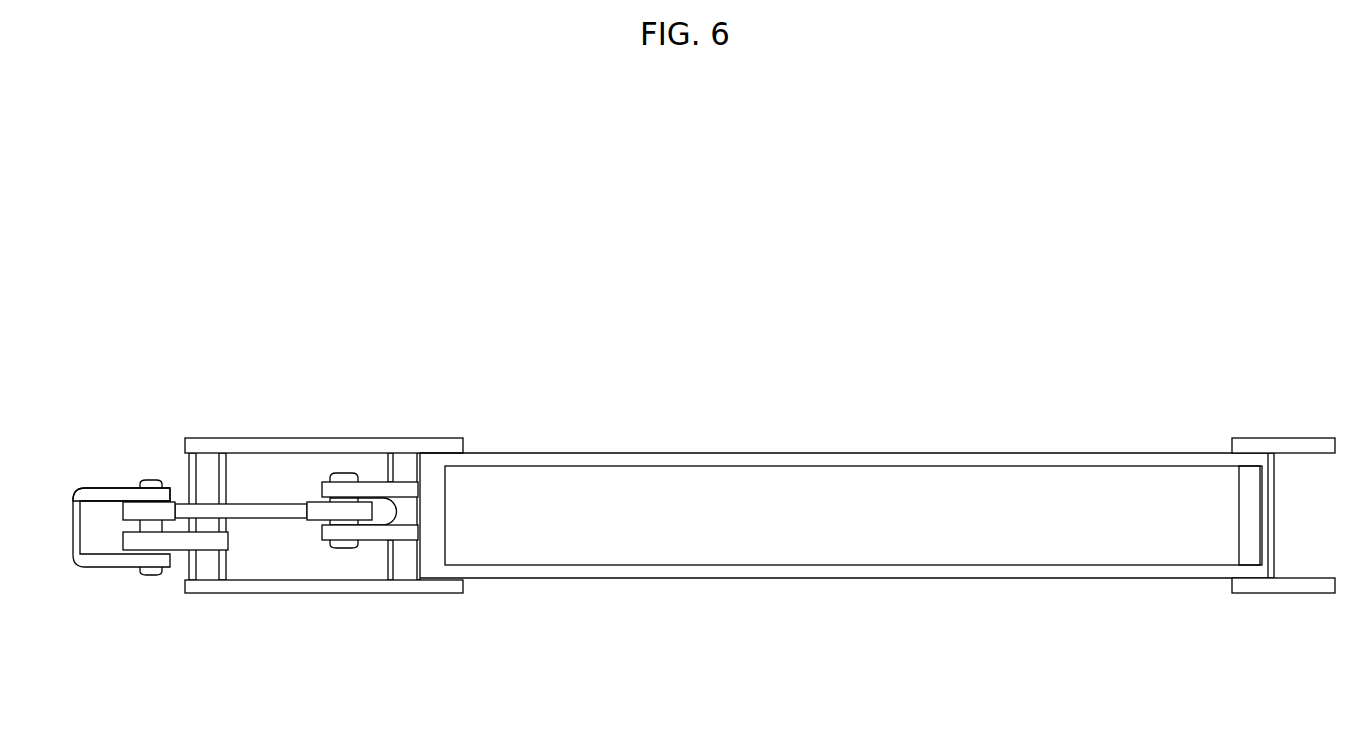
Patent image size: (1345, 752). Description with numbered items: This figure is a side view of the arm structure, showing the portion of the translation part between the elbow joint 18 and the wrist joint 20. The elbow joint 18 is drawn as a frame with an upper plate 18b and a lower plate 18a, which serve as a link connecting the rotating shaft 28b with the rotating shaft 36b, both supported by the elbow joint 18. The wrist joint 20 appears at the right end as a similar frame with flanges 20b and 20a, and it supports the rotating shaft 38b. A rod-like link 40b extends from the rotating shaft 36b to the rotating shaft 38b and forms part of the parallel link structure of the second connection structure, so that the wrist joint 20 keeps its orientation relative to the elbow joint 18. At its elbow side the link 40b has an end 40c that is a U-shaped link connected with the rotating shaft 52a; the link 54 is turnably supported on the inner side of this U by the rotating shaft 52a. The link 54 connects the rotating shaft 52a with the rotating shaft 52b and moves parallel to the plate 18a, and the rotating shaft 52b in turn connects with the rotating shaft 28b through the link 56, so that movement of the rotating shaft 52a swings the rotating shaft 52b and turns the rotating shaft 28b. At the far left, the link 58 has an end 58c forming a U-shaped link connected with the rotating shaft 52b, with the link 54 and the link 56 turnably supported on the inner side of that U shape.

The elbow joint 18 is at (338, 517).
The plate 18a is at (375, 593).
The plate 18b is at (370, 438).
The wrist joint 20 is at (1283, 518).
The lower flange of second frame 20a is at (1287, 593).
The upper flange of second frame 20b is at (1282, 438).
The rotating shaft 28b is at (223, 567).
The rotating shaft 36b is at (403, 570).
The rotating shaft 38b is at (1238, 535).
The link 40b is at (875, 578).
The end 40c is at (375, 475).
The rotating shaft 52a is at (348, 548).
The rotating shaft 52b is at (148, 577).
The link 54 is at (281, 520).
The link 56 is at (181, 552).
The link 58 is at (73, 530).
The end 58c is at (109, 486).